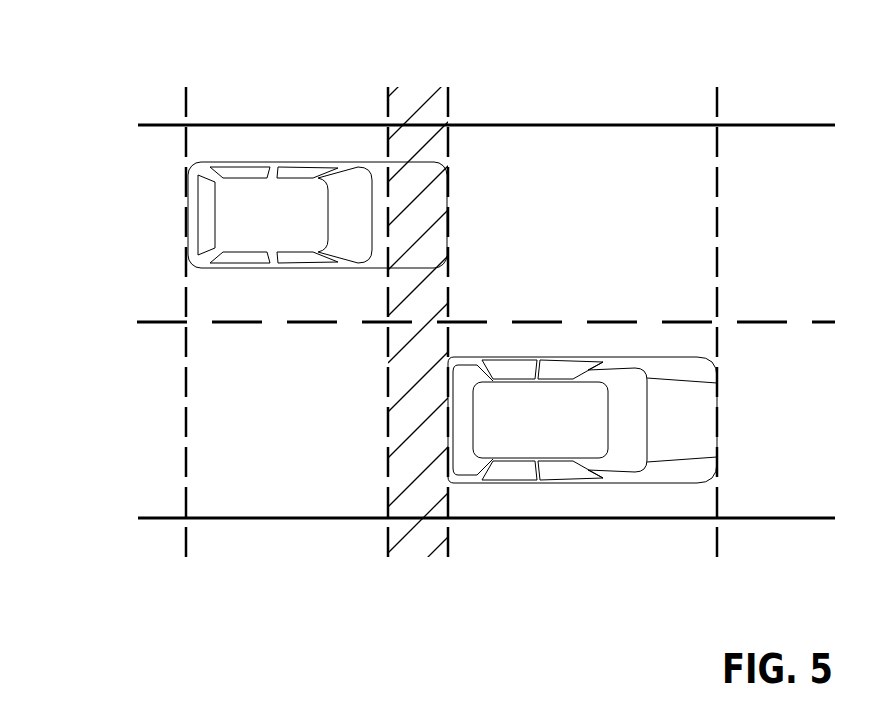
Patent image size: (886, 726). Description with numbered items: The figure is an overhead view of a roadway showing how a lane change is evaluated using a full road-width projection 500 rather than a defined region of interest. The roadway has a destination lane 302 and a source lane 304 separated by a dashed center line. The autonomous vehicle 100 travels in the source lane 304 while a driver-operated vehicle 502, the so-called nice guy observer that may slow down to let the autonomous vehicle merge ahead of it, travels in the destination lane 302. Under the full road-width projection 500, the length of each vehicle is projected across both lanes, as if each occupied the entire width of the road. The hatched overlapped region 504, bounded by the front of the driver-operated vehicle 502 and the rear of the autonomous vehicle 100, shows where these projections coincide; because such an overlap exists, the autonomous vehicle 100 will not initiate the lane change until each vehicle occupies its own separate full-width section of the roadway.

The autonomous vehicle 100 is at (508, 481).
The destination lane 302 is at (821, 206).
The source lane 304 is at (826, 432).
The full road-width projection 500 is at (97, 125).
The driver-operated vehicle 502 is at (365, 163).
The overlapped region 504 is at (428, 95).